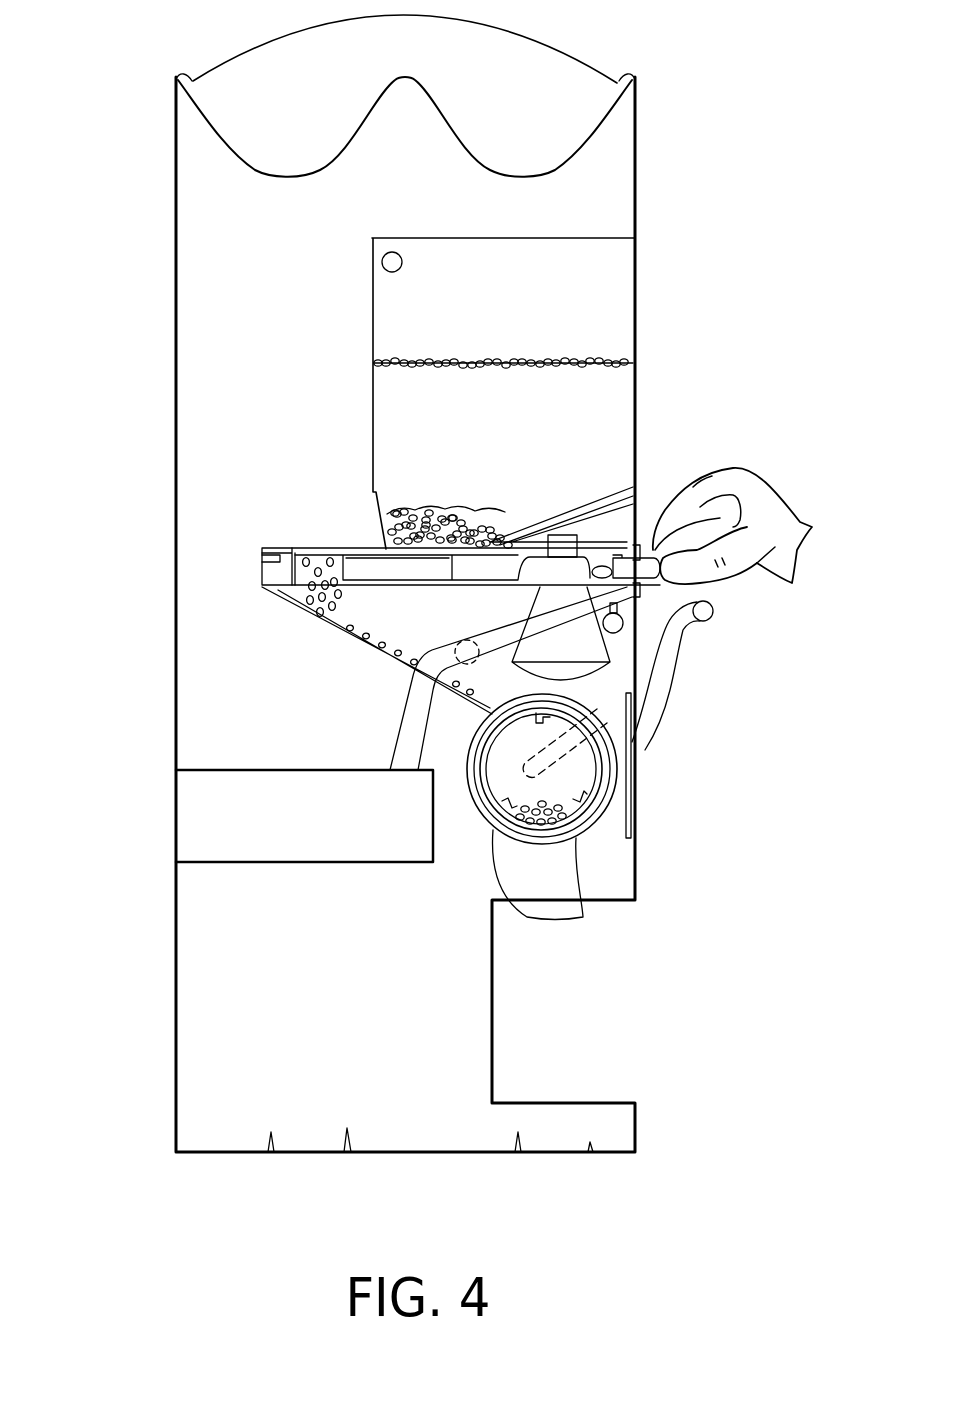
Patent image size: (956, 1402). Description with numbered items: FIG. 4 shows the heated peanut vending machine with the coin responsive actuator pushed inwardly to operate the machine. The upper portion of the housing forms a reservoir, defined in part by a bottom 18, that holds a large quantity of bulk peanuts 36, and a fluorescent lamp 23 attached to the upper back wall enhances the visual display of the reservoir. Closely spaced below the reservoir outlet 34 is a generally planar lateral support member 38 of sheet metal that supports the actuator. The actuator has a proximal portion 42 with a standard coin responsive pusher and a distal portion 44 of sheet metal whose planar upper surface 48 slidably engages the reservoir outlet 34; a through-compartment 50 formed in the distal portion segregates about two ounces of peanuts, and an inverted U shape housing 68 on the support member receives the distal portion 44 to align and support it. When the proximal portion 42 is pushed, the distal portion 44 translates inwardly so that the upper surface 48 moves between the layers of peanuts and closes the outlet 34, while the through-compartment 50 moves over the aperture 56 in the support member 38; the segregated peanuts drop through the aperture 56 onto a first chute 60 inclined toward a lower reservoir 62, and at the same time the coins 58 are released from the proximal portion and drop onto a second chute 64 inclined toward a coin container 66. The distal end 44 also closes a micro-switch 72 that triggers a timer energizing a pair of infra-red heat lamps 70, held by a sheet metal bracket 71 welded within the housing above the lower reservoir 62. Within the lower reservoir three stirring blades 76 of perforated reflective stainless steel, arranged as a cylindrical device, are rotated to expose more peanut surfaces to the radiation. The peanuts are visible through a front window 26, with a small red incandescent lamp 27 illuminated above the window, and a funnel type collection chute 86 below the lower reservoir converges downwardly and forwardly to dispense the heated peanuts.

The bottom 18 is at (597, 481).
The fluorescent lamp 23 is at (384, 256).
The front window 26 is at (628, 750).
The red incandescent lamp 27 is at (622, 626).
The outlet 34 is at (413, 512).
The bulk peanuts 36 is at (518, 398).
The lateral support member 38 is at (365, 587).
The proximal portion 42 is at (663, 583).
The distal portion 44 is at (275, 570).
The upper surface 48 is at (373, 547).
The through-compartment 50 is at (307, 565).
The aperture 56 is at (283, 587).
The coins 58 is at (466, 640).
The first chute 60 is at (350, 633).
The lower reservoir 62 is at (603, 797).
The second chute 64 is at (410, 713).
The coin container 66 is at (192, 822).
The inverted U shape housing 68 is at (324, 548).
The infra-red heat lamps 70 is at (562, 643).
The sheet metal bracket 71 is at (600, 540).
The micro-switch 72 is at (270, 555).
The stirring blades 76 is at (507, 807).
The collection chute 86 is at (545, 898).